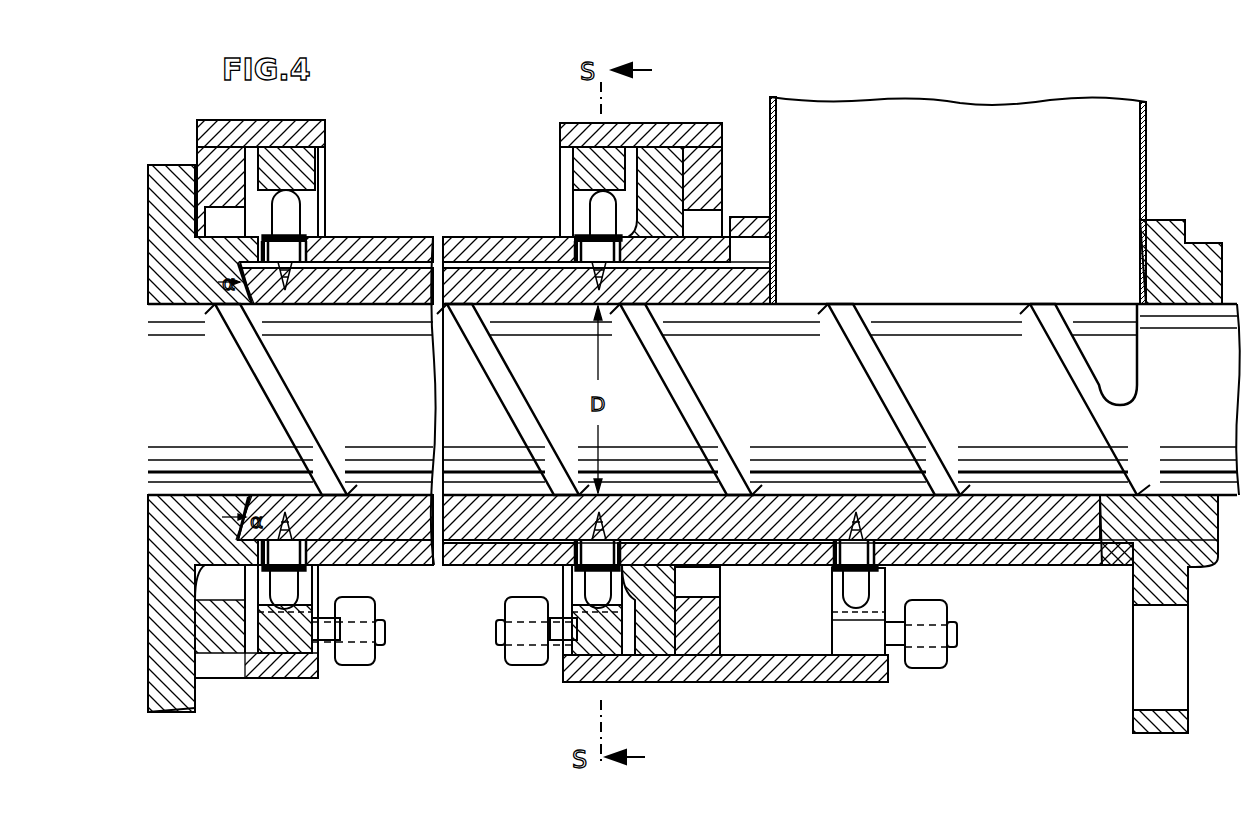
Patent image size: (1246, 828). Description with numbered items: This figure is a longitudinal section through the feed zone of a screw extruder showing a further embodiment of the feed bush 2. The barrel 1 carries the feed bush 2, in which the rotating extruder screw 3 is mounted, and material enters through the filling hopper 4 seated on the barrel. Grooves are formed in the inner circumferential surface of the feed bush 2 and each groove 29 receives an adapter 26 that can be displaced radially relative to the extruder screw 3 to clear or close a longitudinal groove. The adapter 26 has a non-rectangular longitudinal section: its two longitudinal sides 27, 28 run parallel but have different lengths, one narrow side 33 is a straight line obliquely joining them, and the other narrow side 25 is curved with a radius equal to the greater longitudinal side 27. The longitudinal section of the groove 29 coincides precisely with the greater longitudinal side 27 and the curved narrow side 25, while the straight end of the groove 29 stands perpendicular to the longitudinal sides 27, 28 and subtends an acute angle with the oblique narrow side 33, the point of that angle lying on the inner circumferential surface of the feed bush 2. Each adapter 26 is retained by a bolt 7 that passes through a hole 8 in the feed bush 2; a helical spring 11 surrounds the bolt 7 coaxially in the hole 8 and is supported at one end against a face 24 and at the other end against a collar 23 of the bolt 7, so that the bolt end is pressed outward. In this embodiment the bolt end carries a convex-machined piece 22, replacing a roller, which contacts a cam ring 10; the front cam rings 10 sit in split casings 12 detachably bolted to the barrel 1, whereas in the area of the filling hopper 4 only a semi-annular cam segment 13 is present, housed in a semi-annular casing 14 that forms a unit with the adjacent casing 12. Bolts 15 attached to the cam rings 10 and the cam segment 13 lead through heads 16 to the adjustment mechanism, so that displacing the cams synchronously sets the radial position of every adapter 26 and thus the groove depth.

The barrel 1 is at (1190, 257).
The feed bush 2 is at (493, 257).
The extruder screw 3 is at (385, 298).
The filling hopper 4 is at (962, 205).
The bolt 7 is at (300, 220).
The hole 8 is at (840, 553).
The cam ring 10 is at (587, 648).
The helical spring 11 is at (574, 549).
The split casing 12 is at (262, 670).
The cam segment 13 is at (843, 647).
The semi-annular casing 14 is at (845, 673).
The bolt 15 is at (328, 650).
The head 16 is at (358, 657).
The convex-machined piece 22 is at (298, 196).
The collar 23 is at (853, 610).
The face 24 is at (250, 492).
The narrow side 25 is at (775, 268).
The adapter 26 is at (990, 518).
The longitudinal side 27 is at (543, 308).
The longitudinal side 28 is at (478, 245).
The groove 29 is at (1033, 540).
The narrow side 33 is at (268, 292).